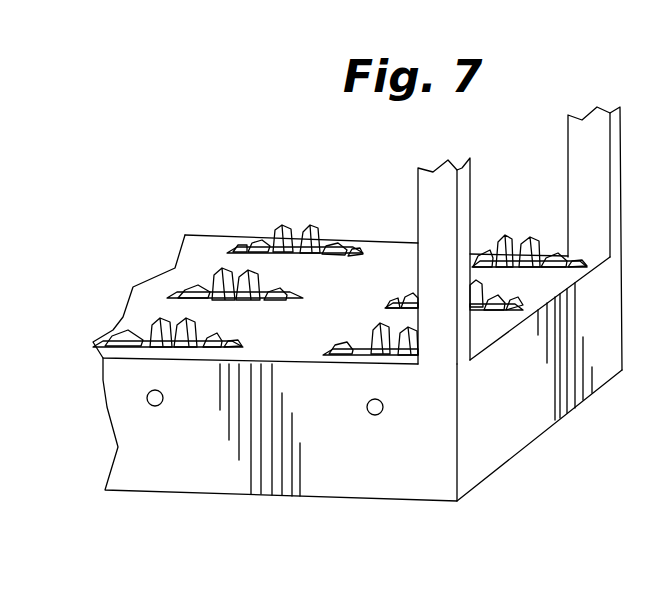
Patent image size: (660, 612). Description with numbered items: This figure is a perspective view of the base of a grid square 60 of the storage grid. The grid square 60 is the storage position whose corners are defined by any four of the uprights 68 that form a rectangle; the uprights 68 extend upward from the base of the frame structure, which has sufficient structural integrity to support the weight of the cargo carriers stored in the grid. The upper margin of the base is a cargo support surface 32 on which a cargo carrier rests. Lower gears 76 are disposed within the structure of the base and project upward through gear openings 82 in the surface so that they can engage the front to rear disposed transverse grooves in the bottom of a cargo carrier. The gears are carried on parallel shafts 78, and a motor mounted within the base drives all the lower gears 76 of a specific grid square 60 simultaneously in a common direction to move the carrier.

The cargo support surface 32 is at (217, 243).
The grid square 60 is at (257, 495).
The upright 68 is at (433, 190).
The lower gear 76 is at (282, 225).
The shaft 78 is at (148, 404).
The gear opening 82 is at (240, 247).